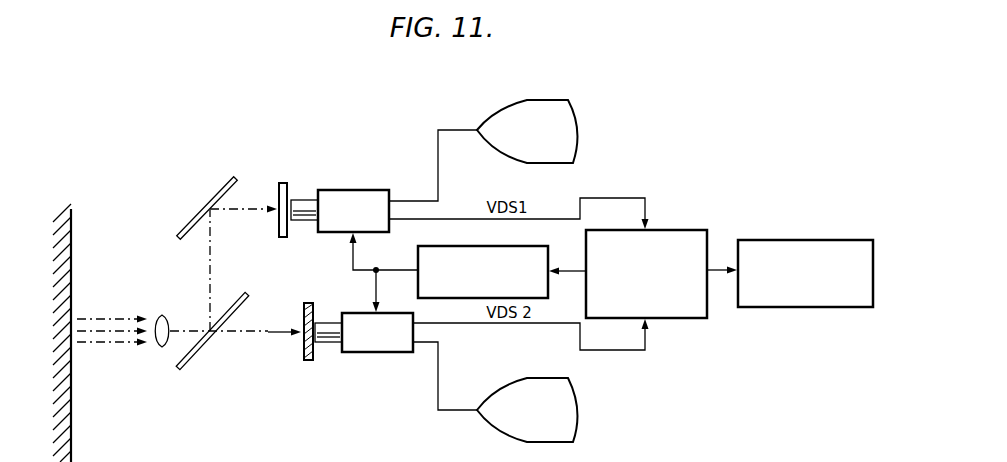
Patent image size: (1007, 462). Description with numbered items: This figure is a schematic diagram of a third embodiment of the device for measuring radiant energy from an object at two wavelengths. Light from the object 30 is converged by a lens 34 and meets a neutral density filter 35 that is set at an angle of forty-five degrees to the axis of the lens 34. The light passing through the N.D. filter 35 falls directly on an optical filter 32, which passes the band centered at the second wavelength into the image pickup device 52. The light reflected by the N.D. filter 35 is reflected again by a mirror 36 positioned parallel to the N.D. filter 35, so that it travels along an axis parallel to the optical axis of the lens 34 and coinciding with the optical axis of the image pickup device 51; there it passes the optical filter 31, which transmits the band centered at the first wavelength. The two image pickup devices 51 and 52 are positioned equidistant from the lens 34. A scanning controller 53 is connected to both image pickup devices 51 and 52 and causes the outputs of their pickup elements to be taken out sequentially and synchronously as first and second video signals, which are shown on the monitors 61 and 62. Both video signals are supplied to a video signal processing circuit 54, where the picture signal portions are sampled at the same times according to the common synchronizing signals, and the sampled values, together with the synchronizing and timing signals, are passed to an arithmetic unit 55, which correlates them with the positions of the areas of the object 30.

The object 30 is at (43, 332).
The optical filter 31 is at (278, 190).
The optical filter 32 is at (302, 352).
The lens 34 is at (155, 352).
The neutral density filter 35 is at (192, 364).
The mirror 36 is at (222, 186).
The image pickup device 51 is at (344, 190).
The image pickup device 52 is at (367, 353).
The scanning controller 53 is at (523, 246).
The video signal processing circuit 54 is at (668, 230).
The arithmetic unit 55 is at (835, 240).
The monitor 61 is at (578, 148).
The monitor 62 is at (573, 427).